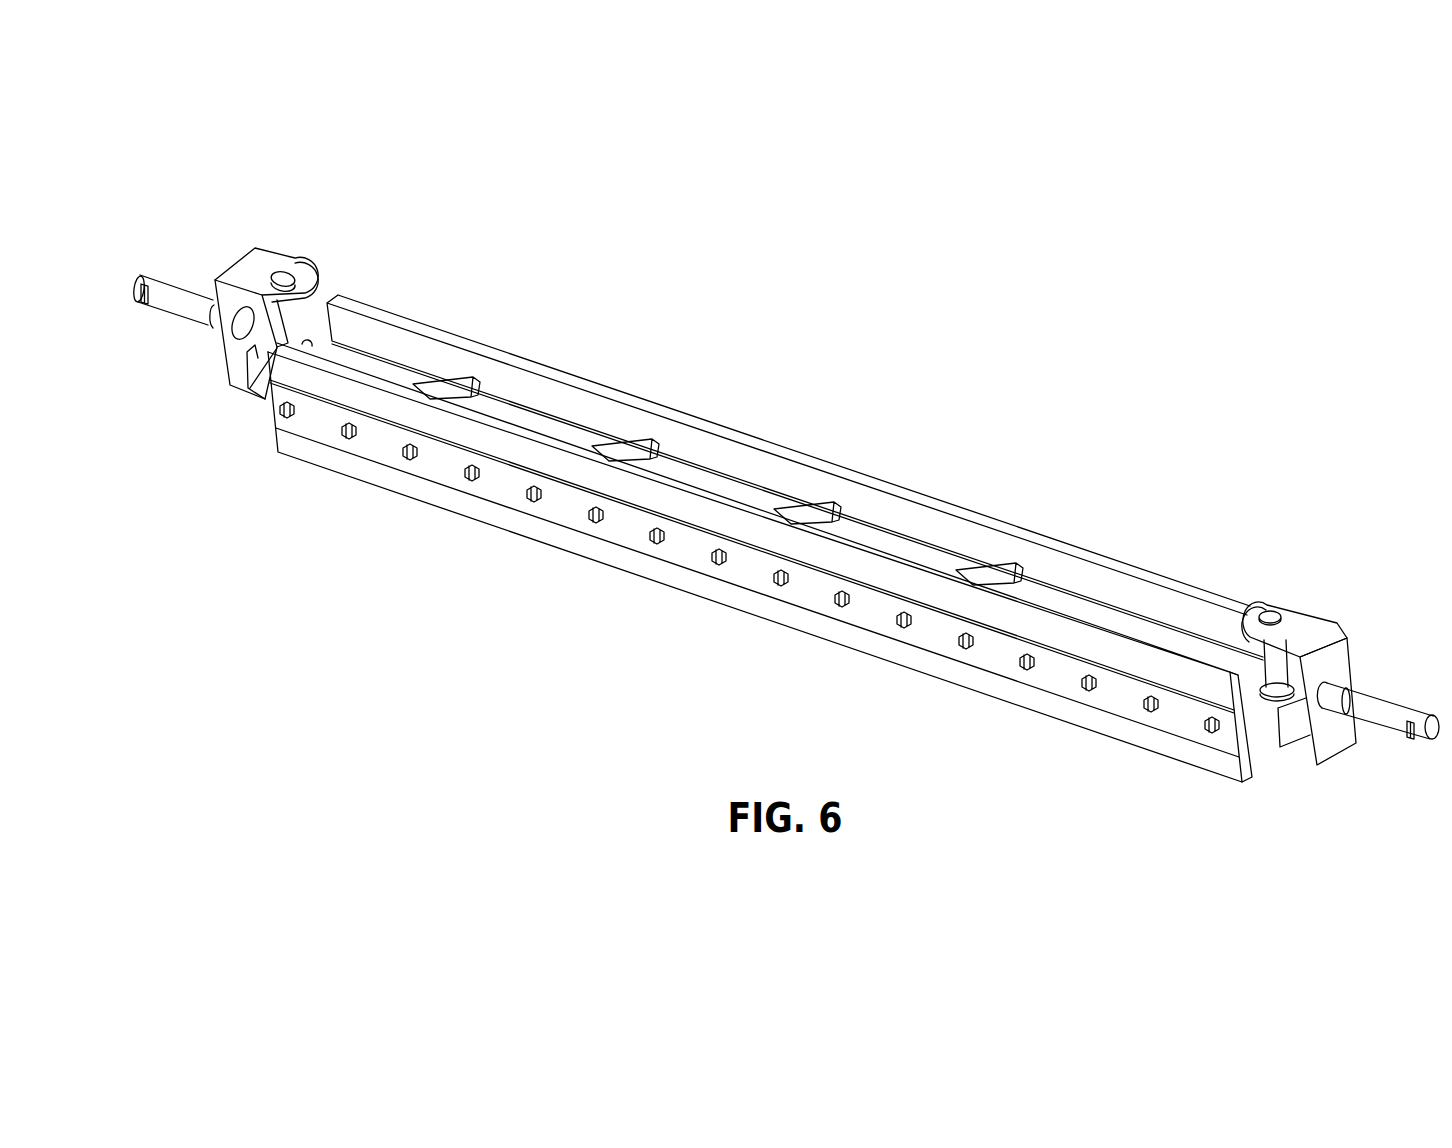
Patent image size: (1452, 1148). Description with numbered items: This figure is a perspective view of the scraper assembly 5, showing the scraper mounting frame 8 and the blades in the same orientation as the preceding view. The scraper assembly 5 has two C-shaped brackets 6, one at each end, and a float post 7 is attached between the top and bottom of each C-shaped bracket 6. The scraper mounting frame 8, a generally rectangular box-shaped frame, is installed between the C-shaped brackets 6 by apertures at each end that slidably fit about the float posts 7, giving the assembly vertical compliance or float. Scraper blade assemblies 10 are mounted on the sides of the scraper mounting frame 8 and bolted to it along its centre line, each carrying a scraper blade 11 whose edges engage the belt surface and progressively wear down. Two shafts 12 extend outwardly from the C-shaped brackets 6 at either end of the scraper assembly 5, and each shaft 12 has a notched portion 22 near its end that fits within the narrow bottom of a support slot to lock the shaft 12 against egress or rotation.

The scraper assembly 5 is at (955, 308).
The C-shaped bracket 6 is at (222, 373).
The float post 7 is at (287, 312).
The scraper mounting frame 8 is at (712, 485).
The scraper blade assembly 10 is at (1068, 517).
The scraper blade 11 is at (610, 398).
The shaft 12 is at (158, 290).
The notched portion 22 is at (1418, 740).